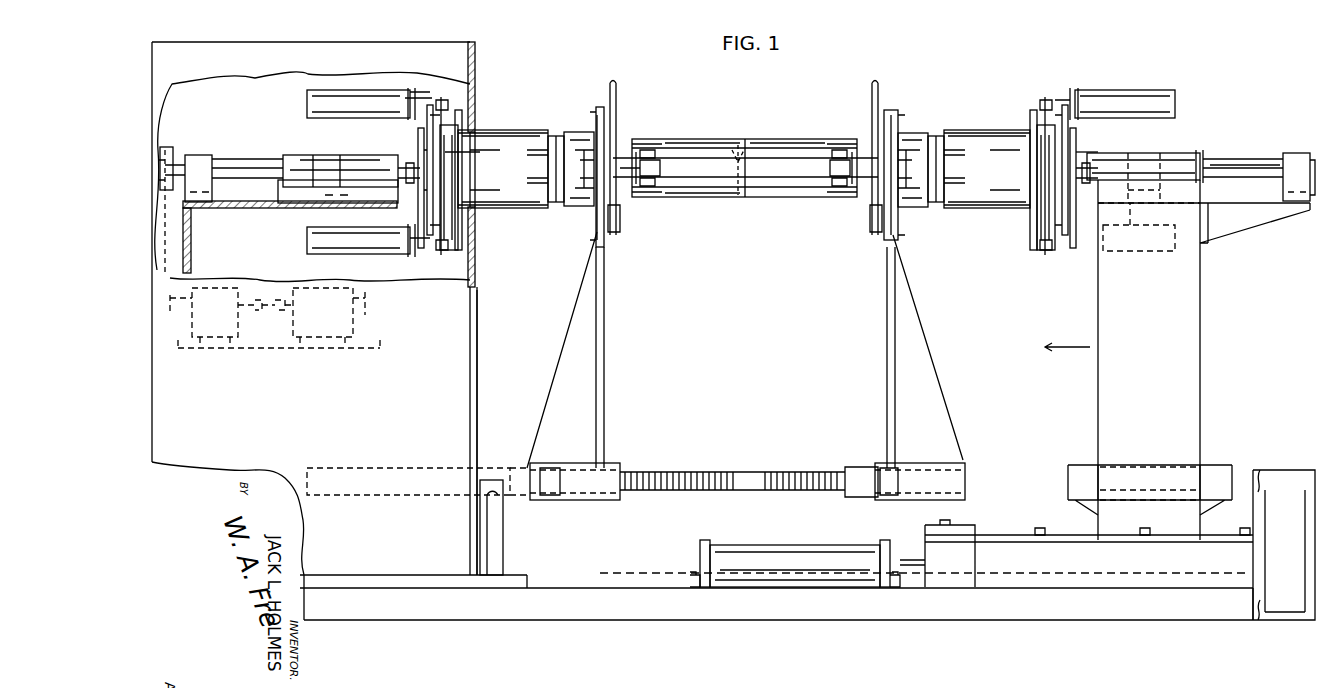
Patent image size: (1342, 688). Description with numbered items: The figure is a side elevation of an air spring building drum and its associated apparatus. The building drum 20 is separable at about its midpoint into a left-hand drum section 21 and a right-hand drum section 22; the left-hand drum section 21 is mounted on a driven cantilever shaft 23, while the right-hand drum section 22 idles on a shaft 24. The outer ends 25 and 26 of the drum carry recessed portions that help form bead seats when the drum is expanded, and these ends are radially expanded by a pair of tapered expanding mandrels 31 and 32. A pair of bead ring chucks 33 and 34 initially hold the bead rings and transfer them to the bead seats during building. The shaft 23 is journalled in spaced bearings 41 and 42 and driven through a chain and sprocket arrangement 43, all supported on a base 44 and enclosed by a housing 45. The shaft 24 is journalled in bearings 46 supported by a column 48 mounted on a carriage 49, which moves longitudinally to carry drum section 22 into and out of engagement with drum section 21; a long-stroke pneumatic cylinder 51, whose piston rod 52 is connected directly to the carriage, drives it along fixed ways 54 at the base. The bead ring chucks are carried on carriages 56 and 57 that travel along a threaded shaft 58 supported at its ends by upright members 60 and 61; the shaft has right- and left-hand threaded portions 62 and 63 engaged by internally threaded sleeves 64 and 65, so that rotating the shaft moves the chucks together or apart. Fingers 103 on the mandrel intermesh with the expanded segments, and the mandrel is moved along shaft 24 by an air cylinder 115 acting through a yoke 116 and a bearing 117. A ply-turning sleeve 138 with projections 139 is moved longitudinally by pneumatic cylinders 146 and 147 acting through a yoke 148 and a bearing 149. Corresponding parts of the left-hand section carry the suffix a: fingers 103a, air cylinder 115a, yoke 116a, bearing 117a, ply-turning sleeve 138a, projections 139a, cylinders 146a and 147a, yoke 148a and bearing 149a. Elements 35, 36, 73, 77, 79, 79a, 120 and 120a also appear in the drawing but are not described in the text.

The building drum 20 is at (770, 208).
The left-hand drum section 21 is at (722, 144).
The right-hand drum section 22 is at (780, 144).
The driven cantilever shaft 23 is at (254, 159).
The shaft 24 is at (1236, 159).
The outer drum end 25 is at (642, 140).
The outer drum end 26 is at (840, 140).
The tapered expanding mandrel 31 is at (566, 206).
The tapered expanding mandrel 32 is at (919, 212).
The bead ring chuck 33 is at (614, 230).
The bead ring chuck 34 is at (866, 232).
The tubular housing 35 is at (510, 218).
The tubular housing 36 is at (976, 220).
The bearing 41 is at (204, 155).
The bearing 42 is at (338, 155).
The chain and sprocket arrangement 43 is at (181, 246).
The base 44 is at (532, 586).
The housing 45 is at (478, 344).
The bearing 46 is at (1157, 155).
The column 48 is at (1100, 297).
The carriage 49 is at (1122, 512).
The long-stroke pneumatic cylinder 51 is at (818, 548).
The piston rod 52 is at (910, 558).
The fixed ways 54 is at (983, 612).
The carriage 56 is at (607, 400).
The carriage 57 is at (886, 386).
The threaded shaft 58 is at (748, 472).
The upright member 60 is at (505, 540).
The upright member 61 is at (1306, 462).
The threaded portion 62 is at (684, 472).
The threaded portion 63 is at (816, 472).
The internally threaded sleeve 64 is at (615, 463).
The internally threaded sleeve 65 is at (873, 463).
The centerline joint 73 is at (738, 142).
The spindle sleeve 77 is at (733, 200).
The key 79 is at (812, 152).
The key 79a is at (680, 152).
The finger 103 is at (910, 135).
The finger 103a is at (582, 192).
The air cylinder 115 is at (1190, 160).
The air cylinder 115a is at (300, 160).
The yoke 116 is at (1084, 185).
The yoke 116a is at (399, 170).
The bearing 117 is at (1080, 148).
The bearing 117a is at (410, 150).
The stop block 120 is at (868, 218).
The stop block 120a is at (618, 212).
The ply-turning sleeve 138 is at (1005, 208).
The ply-turning sleeve 138a is at (494, 133).
The projection 139 is at (948, 178).
The projection 139a is at (535, 178).
The pneumatic cylinder 146 is at (1160, 72).
The pneumatic cylinder 146a is at (352, 90).
The pneumatic cylinder 147 is at (1133, 252).
The pneumatic cylinder 147a is at (322, 252).
The yoke 148 is at (1052, 242).
The yoke 148a is at (440, 245).
The bearing 149 is at (1090, 150).
The bearing 149a is at (479, 152).